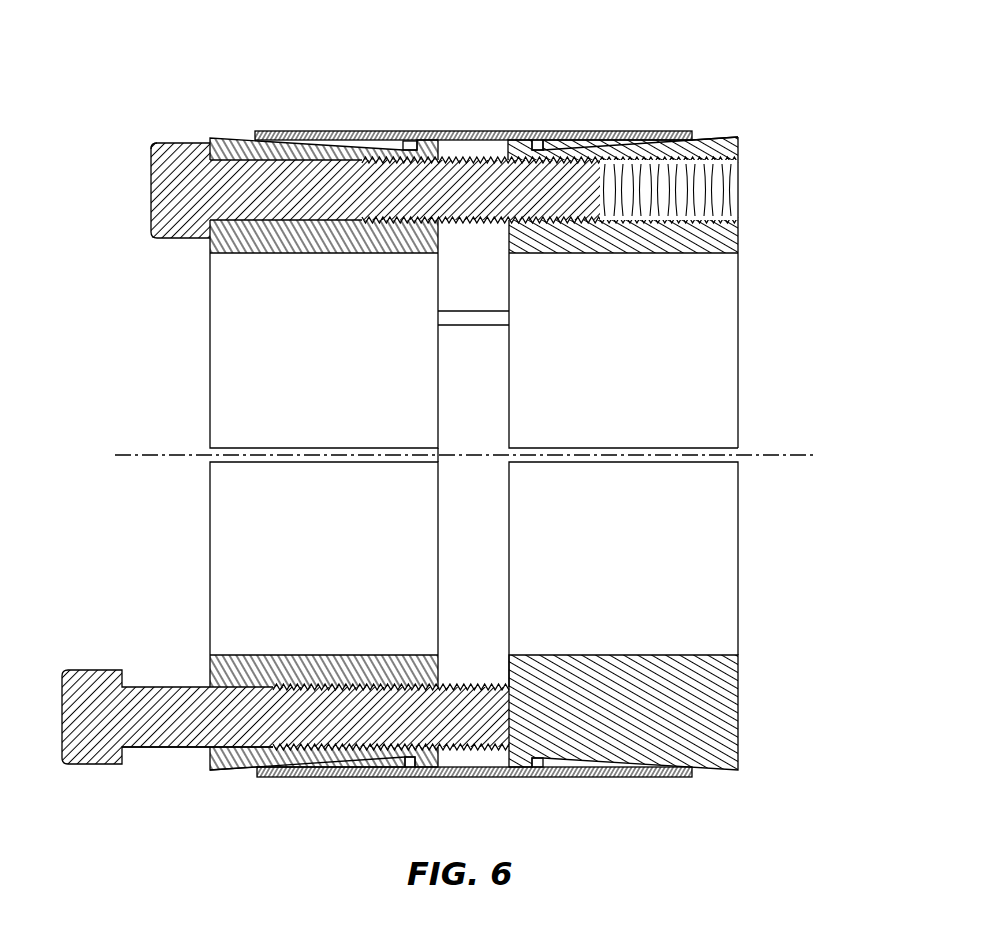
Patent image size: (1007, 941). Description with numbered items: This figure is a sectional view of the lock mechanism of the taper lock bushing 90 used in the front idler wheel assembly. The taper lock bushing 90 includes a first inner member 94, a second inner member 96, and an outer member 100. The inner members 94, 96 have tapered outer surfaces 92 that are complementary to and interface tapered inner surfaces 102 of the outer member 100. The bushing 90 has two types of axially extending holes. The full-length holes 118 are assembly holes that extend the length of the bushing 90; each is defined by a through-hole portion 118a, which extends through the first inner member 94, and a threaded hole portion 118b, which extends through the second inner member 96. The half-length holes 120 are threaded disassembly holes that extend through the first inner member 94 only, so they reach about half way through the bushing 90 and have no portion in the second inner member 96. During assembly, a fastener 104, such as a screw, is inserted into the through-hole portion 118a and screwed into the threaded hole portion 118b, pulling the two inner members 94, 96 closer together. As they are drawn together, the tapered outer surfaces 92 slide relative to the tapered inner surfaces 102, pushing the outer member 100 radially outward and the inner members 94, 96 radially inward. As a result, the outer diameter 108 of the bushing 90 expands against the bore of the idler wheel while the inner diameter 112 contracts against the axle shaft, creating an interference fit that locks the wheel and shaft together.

The taper lock bushing 90 is at (768, 64).
The tapered outer surfaces 92 is at (229, 145).
The first inner member 94 is at (257, 238).
The second inner member 96 is at (690, 238).
The outer member 100 is at (566, 140).
The tapered inner surfaces 102 is at (367, 148).
The fastener 104 is at (172, 193).
The outer diameter 108 is at (663, 131).
The inner diameter 112 is at (580, 253).
The full-length holes 118 is at (205, 158).
The through-hole portion 118a is at (300, 172).
The threaded hole portion 118b is at (722, 183).
The half-length holes 120 is at (205, 750).